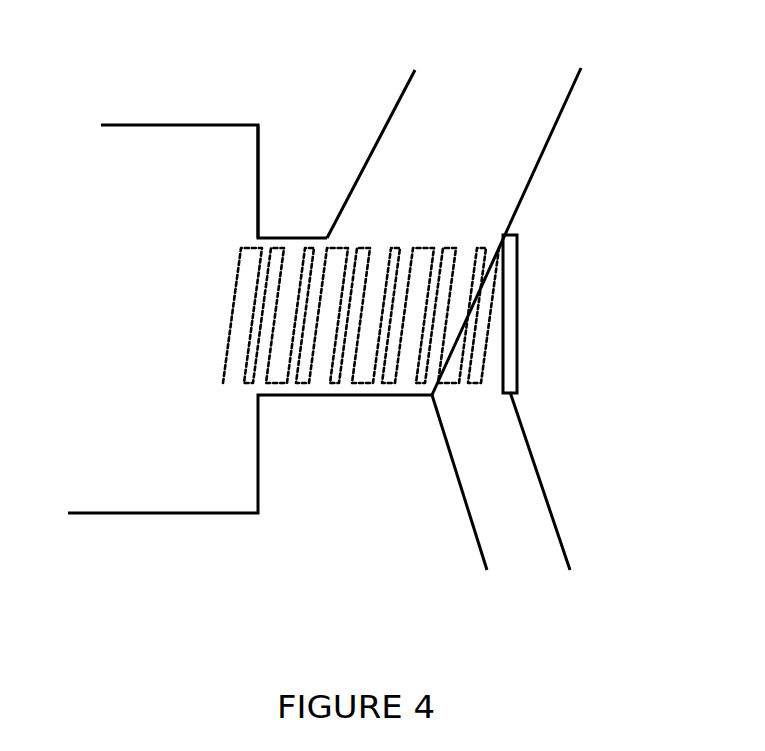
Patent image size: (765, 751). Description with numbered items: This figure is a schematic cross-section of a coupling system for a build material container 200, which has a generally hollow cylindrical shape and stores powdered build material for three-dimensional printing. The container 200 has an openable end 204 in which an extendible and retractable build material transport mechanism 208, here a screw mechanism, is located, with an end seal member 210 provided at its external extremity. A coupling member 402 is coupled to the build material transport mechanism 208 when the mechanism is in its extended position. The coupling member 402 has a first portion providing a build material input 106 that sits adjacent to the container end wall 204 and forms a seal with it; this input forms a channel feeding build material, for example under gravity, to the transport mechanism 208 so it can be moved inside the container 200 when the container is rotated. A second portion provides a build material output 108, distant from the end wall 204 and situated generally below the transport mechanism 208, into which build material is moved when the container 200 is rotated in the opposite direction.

The build material container 200 is at (147, 122).
The openable end 204 is at (260, 178).
The build material input 106 is at (487, 98).
The coupling member 402 is at (548, 140).
The build material transport mechanism 208 is at (355, 240).
The end seal member 210 is at (517, 345).
The build material output 108 is at (517, 568).